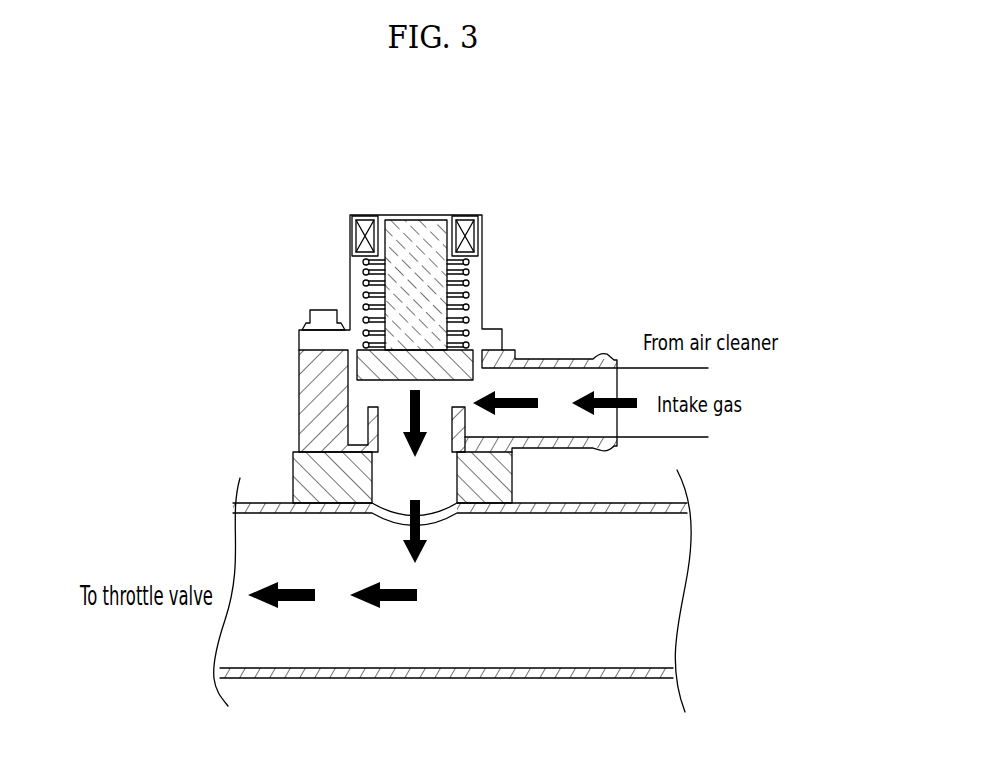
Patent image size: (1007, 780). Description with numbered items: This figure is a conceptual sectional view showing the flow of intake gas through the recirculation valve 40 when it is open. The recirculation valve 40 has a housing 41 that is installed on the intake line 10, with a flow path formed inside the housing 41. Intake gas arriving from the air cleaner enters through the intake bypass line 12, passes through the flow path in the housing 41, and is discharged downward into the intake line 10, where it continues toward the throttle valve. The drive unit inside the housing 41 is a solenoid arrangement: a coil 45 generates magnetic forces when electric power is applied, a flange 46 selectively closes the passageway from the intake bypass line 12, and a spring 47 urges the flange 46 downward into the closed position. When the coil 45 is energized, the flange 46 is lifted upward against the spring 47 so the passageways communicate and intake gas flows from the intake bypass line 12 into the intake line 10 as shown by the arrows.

The intake line 10 is at (577, 676).
The intake bypass line 12 is at (625, 359).
The recirculation valve 40 is at (300, 392).
The housing 41 is at (318, 360).
The coil 45 is at (478, 227).
The flange 46 is at (372, 367).
The spring 47 is at (468, 288).